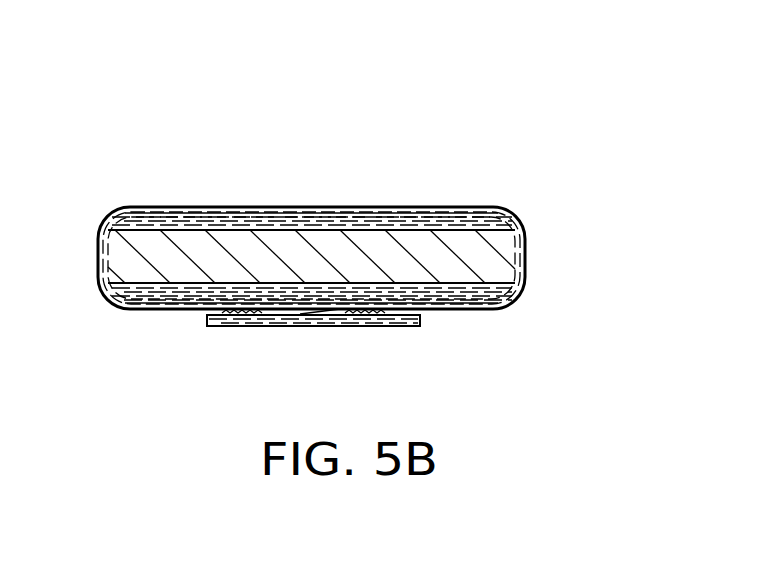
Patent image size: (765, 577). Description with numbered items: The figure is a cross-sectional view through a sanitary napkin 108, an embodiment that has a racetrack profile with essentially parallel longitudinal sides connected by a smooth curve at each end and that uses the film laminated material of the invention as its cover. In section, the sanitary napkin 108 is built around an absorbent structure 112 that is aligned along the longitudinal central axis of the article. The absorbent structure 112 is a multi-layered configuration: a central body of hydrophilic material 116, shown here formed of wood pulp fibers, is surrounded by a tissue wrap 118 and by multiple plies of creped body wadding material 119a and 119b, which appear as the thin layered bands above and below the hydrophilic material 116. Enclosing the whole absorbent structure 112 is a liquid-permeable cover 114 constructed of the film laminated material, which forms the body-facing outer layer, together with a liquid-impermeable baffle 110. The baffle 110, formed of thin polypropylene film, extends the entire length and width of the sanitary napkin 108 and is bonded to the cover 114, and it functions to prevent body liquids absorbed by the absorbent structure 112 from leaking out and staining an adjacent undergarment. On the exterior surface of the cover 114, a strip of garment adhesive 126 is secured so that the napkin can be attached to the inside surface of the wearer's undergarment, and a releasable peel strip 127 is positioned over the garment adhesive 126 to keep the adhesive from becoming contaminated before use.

The sanitary napkin 108 is at (502, 148).
The liquid-impermeable baffle 110 is at (458, 310).
The absorbent structure 112 is at (535, 335).
The liquid-permeable cover 114 is at (352, 208).
The hydrophilic material 116 is at (440, 250).
The tissue wrap 118 is at (172, 208).
The creped body wadding material 119a is at (245, 208).
The creped body wadding material 119b is at (172, 308).
The garment adhesive 126 is at (227, 325).
The releasable peel strip 127 is at (318, 327).